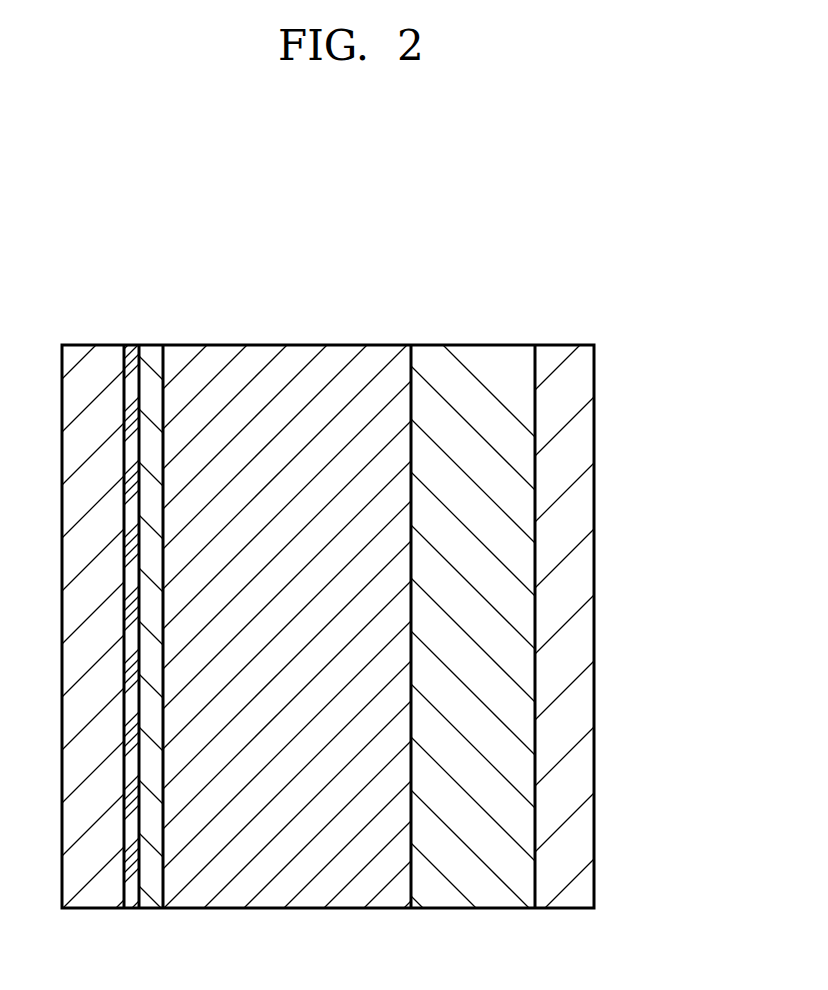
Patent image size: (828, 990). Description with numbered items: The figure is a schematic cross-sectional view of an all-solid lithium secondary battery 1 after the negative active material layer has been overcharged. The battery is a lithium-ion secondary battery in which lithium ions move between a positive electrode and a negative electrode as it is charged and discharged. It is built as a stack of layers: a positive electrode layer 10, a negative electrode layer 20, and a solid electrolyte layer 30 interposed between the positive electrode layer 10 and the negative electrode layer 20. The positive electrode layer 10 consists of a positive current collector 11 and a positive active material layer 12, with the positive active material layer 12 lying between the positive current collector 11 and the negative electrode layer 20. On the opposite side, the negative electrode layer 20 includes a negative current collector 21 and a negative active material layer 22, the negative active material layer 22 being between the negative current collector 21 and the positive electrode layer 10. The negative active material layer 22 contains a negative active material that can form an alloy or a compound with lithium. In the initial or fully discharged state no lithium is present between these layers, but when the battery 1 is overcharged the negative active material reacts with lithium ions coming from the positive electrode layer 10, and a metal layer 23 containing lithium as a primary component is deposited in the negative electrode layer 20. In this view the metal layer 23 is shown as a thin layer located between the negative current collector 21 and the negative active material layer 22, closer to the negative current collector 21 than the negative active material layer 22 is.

The all-solid lithium secondary battery 1 is at (633, 271).
The positive electrode layer 10 is at (463, 283).
The positive current collector 11 is at (562, 352).
The positive active material layer 12 is at (479, 352).
The negative electrode layer 20 is at (68, 283).
The negative current collector 21 is at (93, 360).
The negative active material layer 22 is at (152, 353).
The metal layer 23 is at (131, 358).
The solid electrolyte layer 30 is at (267, 355).